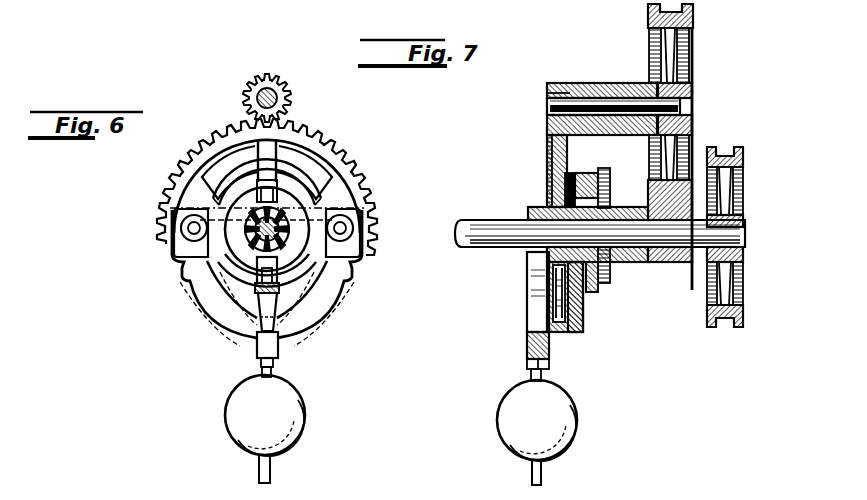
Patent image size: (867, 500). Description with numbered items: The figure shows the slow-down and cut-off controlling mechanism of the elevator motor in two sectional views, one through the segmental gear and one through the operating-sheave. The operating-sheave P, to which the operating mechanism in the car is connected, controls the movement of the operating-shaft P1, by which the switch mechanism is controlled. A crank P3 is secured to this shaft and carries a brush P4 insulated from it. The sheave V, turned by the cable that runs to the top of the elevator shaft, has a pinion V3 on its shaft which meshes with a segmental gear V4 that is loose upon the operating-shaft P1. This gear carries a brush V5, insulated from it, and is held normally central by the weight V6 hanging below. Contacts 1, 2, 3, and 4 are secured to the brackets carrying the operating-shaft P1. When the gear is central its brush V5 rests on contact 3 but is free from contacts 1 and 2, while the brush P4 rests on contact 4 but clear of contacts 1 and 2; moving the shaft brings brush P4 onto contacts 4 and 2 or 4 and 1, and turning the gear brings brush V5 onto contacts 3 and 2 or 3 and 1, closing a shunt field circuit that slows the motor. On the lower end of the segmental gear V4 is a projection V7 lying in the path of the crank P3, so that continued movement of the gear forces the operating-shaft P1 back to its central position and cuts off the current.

In FIG. 6, the sheave V is at (255, 98).
In FIG. 7, the sheave V is at (690, 35).
In FIG. 6, the pinion V3 is at (288, 100).
In FIG. 7, the pinion V3 is at (556, 82).
In FIG. 6, the segmental gear V4 is at (343, 157).
In FIG. 7, the segmental gear V4 is at (503, 312).
In FIG. 6, the brush V5 is at (262, 180).
In FIG. 7, the brush V5 is at (598, 168).
In FIG. 6, the weight V6 is at (286, 412).
In FIG. 7, the weight V6 is at (515, 400).
In FIG. 6, the projection V7 is at (370, 284).
In FIG. 7, the operating-sheave P is at (726, 170).
In FIG. 6, the operating-shaft P1 is at (283, 238).
In FIG. 7, the operating-shaft P1 is at (484, 221).
In FIG. 6, the crank P3 is at (262, 282).
In FIG. 7, the crank P3 is at (578, 335).
In FIG. 6, the brush P4 is at (257, 293).
In FIG. 7, the brush P4 is at (590, 295).
In FIG. 6, the contact 1 is at (290, 224).
In FIG. 7, the contact 1 is at (612, 193).
In FIG. 6, the contact 2 is at (183, 218).
In FIG. 6, the contact 3 is at (284, 190).
In FIG. 7, the contact 3 is at (608, 176).
In FIG. 6, the contact 4 is at (243, 285).
In FIG. 7, the contact 4 is at (600, 290).